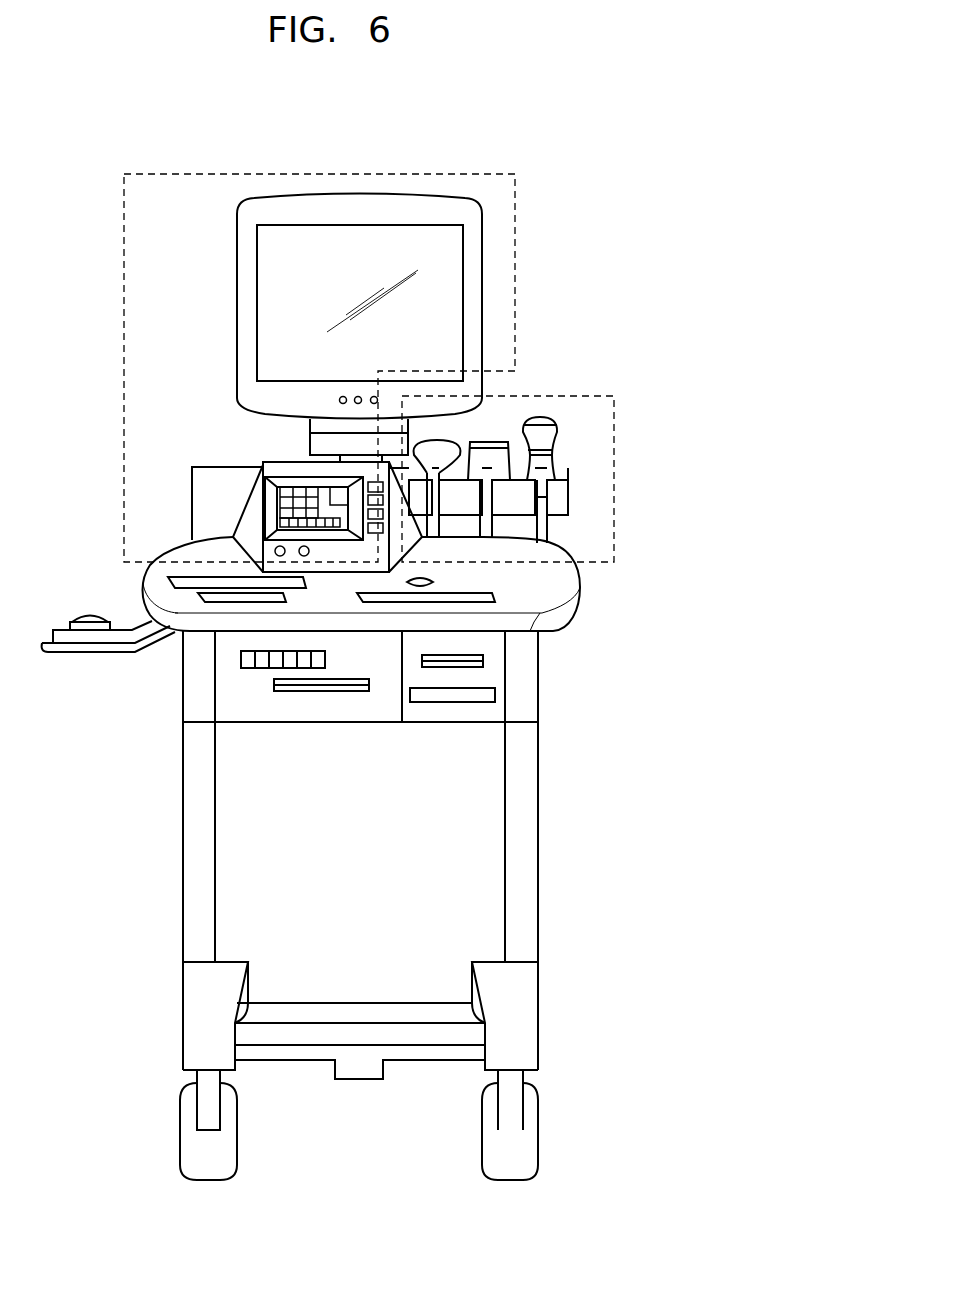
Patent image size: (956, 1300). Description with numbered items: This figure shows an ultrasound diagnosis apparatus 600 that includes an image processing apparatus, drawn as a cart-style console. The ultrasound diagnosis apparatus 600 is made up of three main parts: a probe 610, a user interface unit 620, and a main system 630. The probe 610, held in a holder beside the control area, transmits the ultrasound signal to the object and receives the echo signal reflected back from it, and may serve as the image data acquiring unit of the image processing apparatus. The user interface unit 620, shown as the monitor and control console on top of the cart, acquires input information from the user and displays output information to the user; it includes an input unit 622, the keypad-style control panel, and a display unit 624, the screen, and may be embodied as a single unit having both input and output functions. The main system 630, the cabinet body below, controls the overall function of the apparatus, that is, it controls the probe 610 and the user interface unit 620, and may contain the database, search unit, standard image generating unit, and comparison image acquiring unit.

The ultrasound diagnosis apparatus 600 is at (608, 118).
The probe 610 is at (570, 396).
The user interface unit 620 is at (515, 195).
The input unit 622 is at (270, 508).
The display unit 624 is at (281, 297).
The main system 630 is at (148, 673).